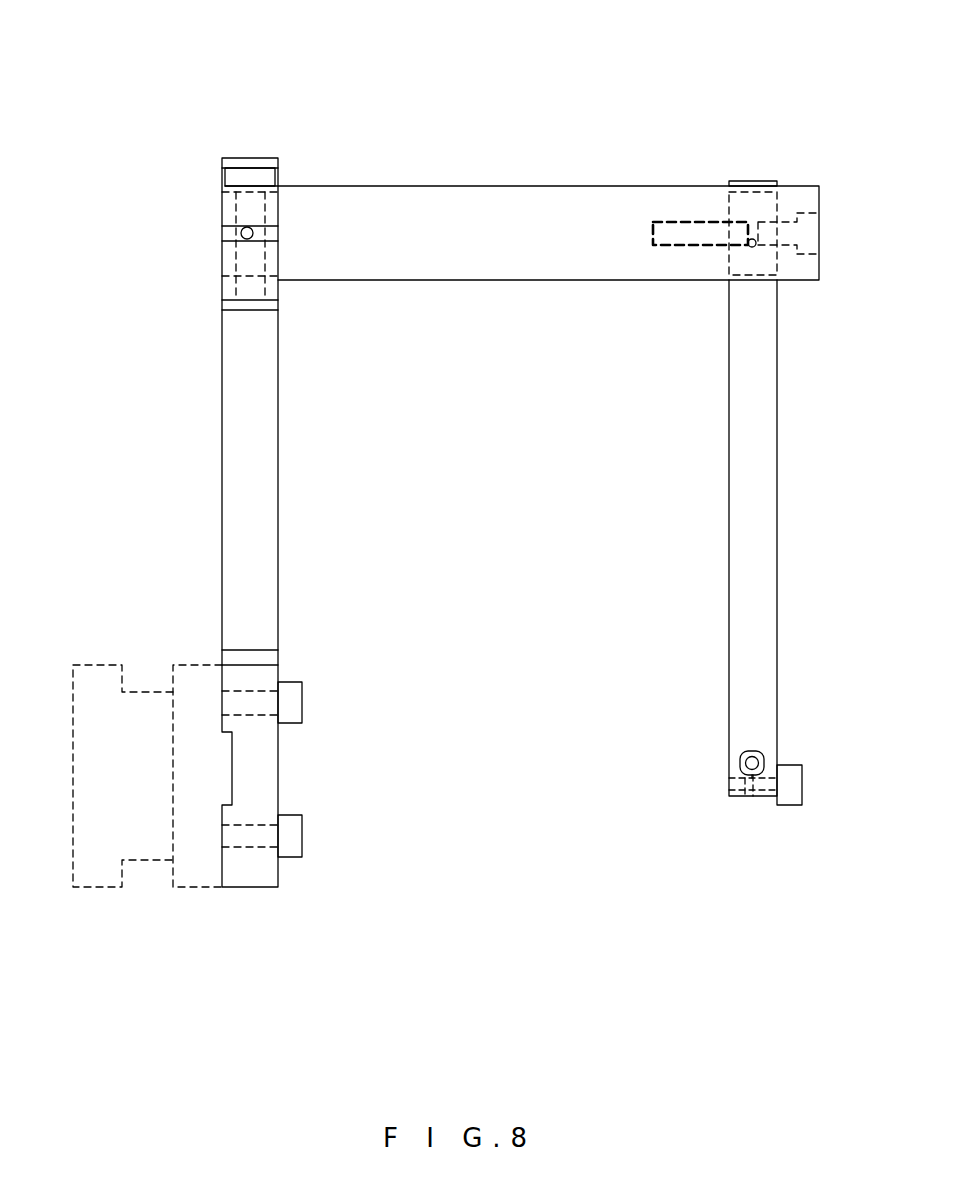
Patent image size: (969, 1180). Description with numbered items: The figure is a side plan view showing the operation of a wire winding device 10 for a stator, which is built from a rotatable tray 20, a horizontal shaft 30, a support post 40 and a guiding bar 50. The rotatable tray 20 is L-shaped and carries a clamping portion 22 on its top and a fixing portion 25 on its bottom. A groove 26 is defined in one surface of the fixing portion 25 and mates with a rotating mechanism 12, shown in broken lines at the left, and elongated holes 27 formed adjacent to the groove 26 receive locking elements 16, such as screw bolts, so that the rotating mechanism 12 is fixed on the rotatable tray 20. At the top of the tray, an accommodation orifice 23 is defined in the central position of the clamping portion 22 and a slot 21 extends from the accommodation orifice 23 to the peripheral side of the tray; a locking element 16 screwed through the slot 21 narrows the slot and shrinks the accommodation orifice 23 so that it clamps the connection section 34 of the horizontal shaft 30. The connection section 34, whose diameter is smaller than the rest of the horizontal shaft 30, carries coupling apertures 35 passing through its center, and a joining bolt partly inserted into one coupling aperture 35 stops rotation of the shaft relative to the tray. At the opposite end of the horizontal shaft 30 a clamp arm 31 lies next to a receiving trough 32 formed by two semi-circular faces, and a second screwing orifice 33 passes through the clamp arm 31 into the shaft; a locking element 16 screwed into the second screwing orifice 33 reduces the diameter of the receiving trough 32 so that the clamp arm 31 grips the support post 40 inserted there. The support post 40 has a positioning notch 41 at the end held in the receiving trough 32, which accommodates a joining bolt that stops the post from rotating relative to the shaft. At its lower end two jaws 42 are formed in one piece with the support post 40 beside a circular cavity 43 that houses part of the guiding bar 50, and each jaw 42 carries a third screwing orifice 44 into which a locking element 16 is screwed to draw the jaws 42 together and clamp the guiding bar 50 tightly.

The wire winding device 10 is at (653, 133).
The rotating mechanism 12 is at (100, 870).
The locking element 16 is at (290, 702).
The rotatable tray 20 is at (260, 400).
The slot 21 is at (227, 235).
The clamping portion 22 is at (258, 160).
The accommodation orifice 23 is at (240, 207).
The fixing portion 25 is at (253, 880).
The groove 26 is at (228, 775).
The elongated hole 27 is at (248, 688).
The horizontal shaft 30 is at (480, 203).
The clamp arm 31 is at (803, 197).
The receiving trough 32 is at (770, 260).
The second screwing orifice 33 is at (688, 235).
The connection section 34 is at (273, 260).
The coupling aperture 35 is at (245, 242).
The support post 40 is at (745, 487).
The positioning notch 41 is at (752, 240).
The jaw 42 is at (737, 797).
The circular cavity 43 is at (753, 797).
The third screwing orifice 44 is at (725, 783).
The guiding bar 50 is at (740, 760).